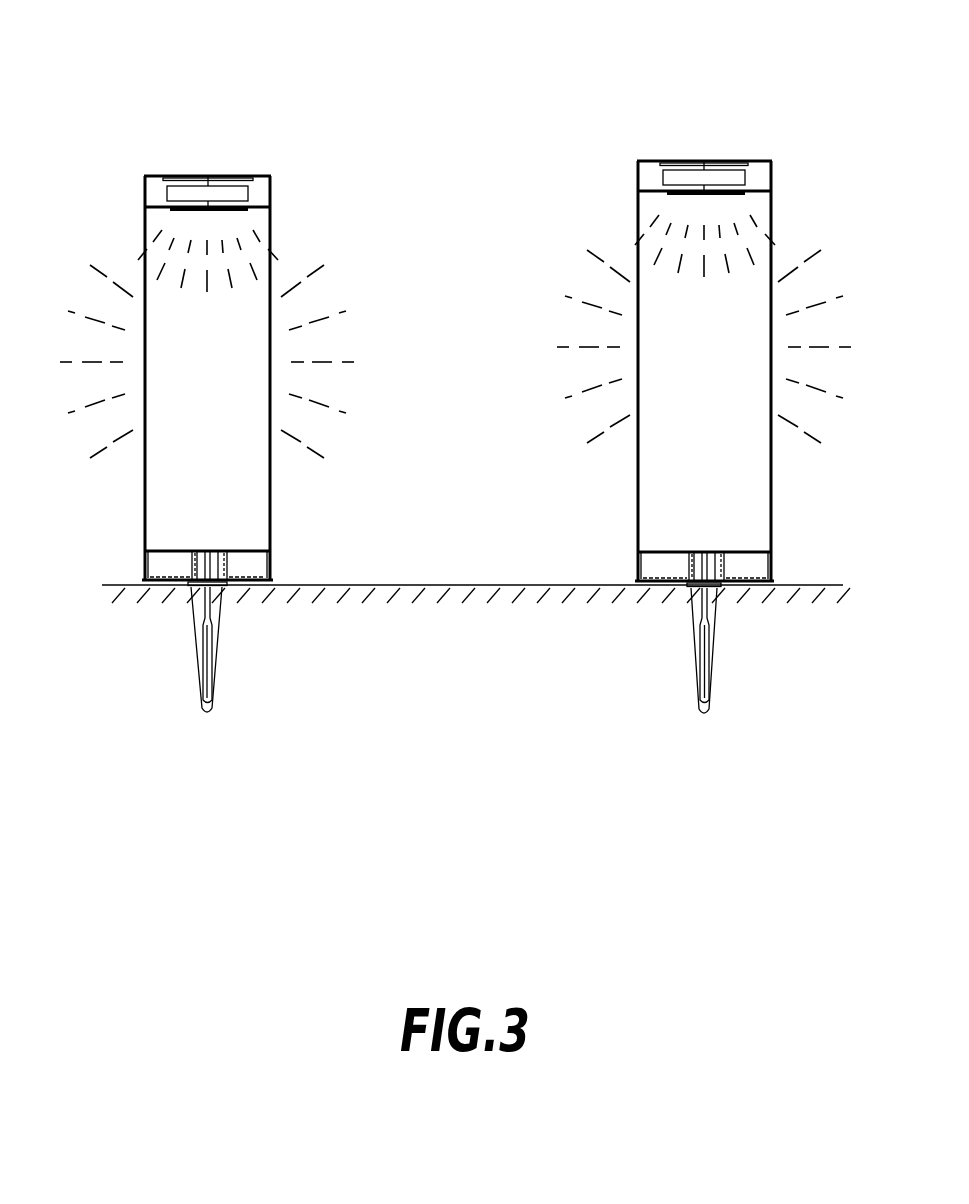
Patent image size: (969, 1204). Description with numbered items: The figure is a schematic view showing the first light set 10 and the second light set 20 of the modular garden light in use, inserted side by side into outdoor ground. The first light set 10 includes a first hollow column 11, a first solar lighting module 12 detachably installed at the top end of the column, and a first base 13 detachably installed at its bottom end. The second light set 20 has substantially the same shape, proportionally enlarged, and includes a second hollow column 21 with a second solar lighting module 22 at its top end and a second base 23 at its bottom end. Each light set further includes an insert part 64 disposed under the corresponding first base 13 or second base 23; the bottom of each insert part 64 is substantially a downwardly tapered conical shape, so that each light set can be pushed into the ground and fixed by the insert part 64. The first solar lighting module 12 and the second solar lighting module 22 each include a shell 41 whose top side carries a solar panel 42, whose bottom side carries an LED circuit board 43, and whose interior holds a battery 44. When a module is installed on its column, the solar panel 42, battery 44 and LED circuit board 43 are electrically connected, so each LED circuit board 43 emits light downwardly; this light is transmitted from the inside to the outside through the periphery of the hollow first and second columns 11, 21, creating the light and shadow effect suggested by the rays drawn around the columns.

The first light set 10 is at (133, 41).
The second light set 20 is at (766, 54).
The first hollow column 11 is at (284, 502).
The first solar lighting module 12 is at (268, 166).
The first base 13 is at (284, 560).
The second hollow column 21 is at (786, 517).
The second solar lighting module 22 is at (769, 151).
The second base 23 is at (786, 562).
The shell 41 is at (272, 188).
The solar panel 42 is at (181, 175).
The LED circuit board 43 is at (176, 211).
The battery 44 is at (167, 193).
The insert part 64 is at (222, 664).